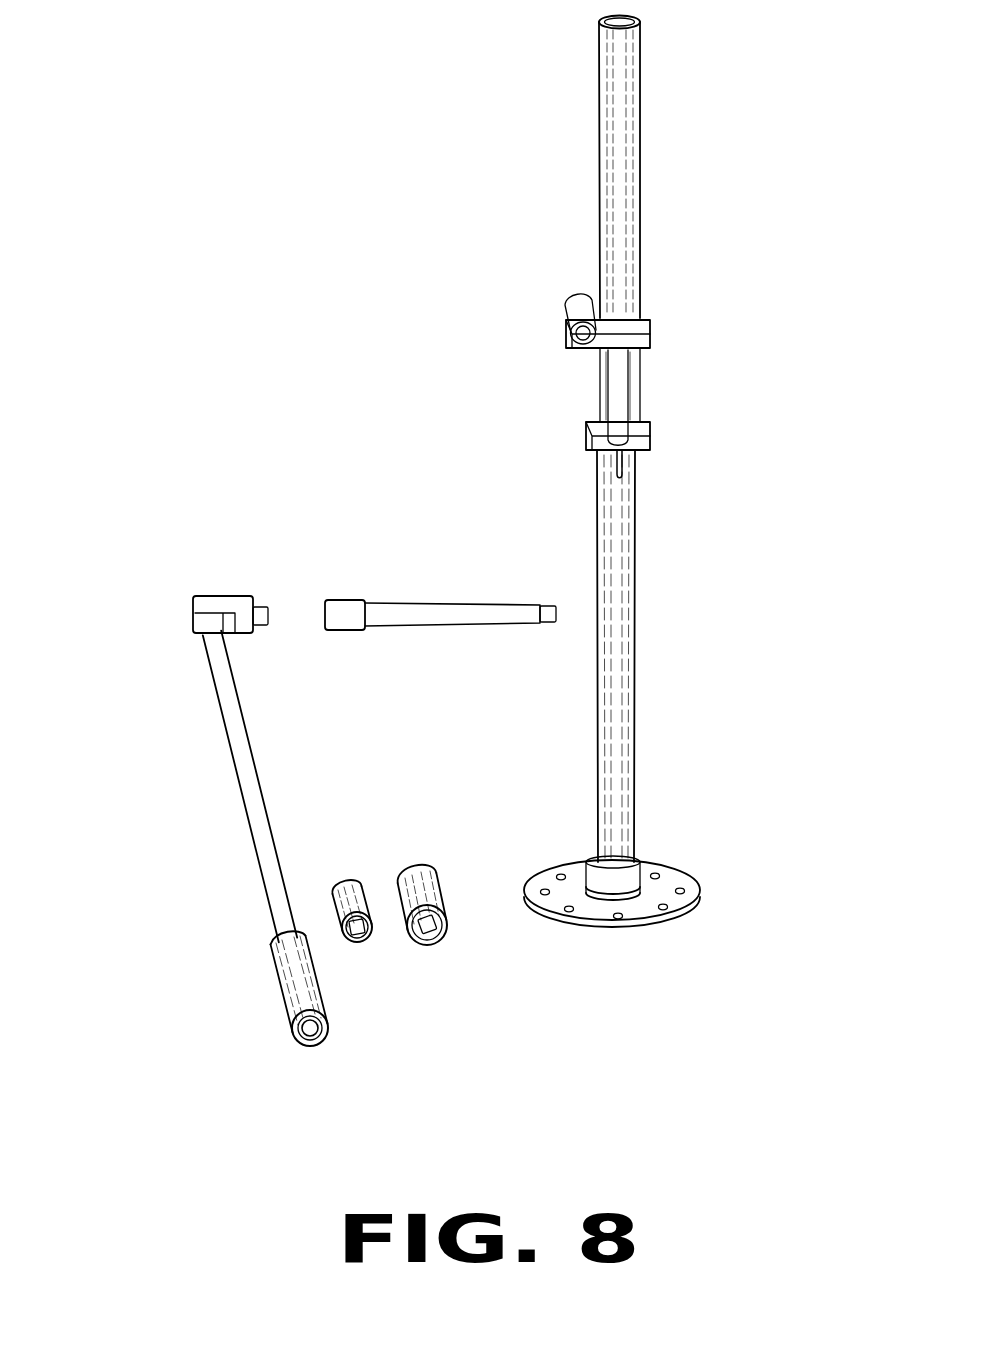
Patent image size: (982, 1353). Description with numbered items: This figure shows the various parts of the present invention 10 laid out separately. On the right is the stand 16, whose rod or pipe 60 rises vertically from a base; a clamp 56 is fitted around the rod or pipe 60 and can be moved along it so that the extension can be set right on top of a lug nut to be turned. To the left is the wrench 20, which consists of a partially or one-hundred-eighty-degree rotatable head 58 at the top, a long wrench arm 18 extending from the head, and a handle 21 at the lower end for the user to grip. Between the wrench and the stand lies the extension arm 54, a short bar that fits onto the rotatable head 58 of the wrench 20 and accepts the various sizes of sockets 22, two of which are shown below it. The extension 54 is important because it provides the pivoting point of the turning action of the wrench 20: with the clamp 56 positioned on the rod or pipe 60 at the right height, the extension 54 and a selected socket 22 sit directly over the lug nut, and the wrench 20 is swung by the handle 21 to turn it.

The present invention 10 is at (750, 282).
The stand 16 is at (556, 150).
The clamp 56 is at (641, 397).
The rod or pipe 60 is at (618, 773).
The wrench 20 is at (212, 810).
The rotatable head 58 is at (222, 600).
The wrench arm 18 is at (248, 758).
The handle 21 is at (290, 1000).
The sockets 22 is at (370, 932).
The extension arm 54 is at (432, 613).